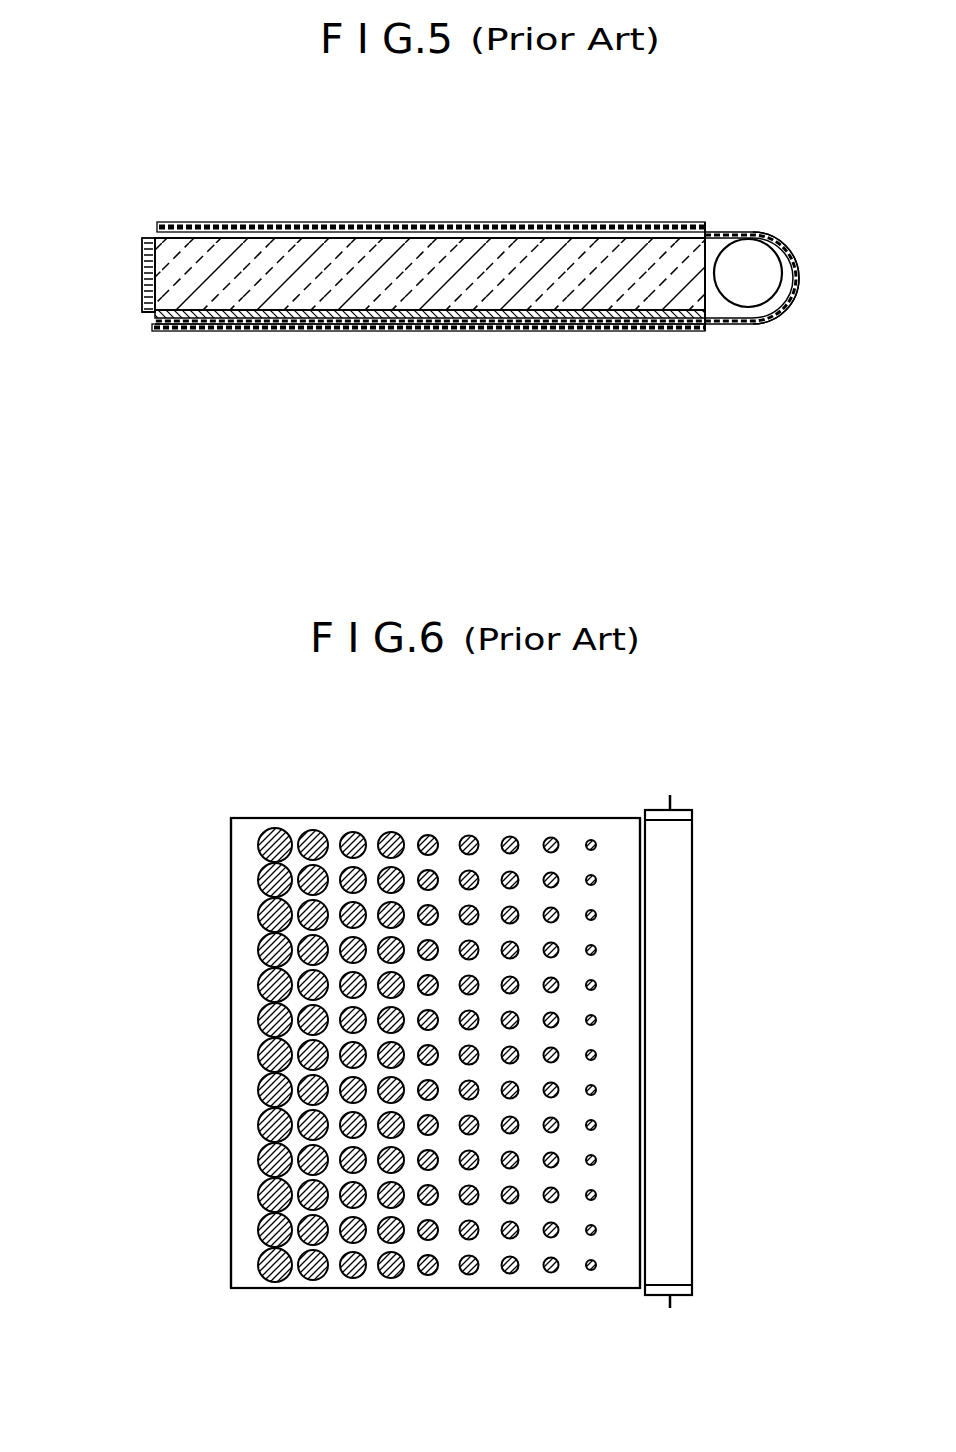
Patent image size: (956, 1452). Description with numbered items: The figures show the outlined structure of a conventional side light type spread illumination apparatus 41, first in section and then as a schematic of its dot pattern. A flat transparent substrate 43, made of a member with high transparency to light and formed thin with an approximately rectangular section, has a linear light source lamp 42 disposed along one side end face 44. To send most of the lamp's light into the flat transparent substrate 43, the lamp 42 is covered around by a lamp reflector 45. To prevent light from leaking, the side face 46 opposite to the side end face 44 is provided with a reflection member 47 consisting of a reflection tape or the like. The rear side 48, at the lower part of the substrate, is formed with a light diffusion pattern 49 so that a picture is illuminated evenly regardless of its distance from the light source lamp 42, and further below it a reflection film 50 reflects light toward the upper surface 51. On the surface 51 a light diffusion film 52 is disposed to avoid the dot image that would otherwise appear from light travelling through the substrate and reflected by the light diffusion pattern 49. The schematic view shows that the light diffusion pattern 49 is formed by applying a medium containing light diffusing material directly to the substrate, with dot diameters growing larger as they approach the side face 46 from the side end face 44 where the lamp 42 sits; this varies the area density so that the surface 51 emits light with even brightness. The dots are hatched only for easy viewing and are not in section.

In FIG. 5, the spread illumination apparatus 41 is at (437, 216).
In FIG. 5, the light source lamp 42 is at (750, 295).
In FIG. 6, the light source lamp 42 is at (680, 920).
In FIG. 5, the flat transparent substrate 43 is at (326, 240).
In FIG. 6, the flat transparent substrate 43 is at (328, 815).
In FIG. 5, the side end face 44 is at (707, 238).
In FIG. 6, the side end face 44 is at (640, 1098).
In FIG. 5, the lamp reflector 45 is at (774, 233).
In FIG. 5, the side face 46 is at (152, 236).
In FIG. 6, the side face 46 is at (233, 1092).
In FIG. 5, the reflection member 47 is at (147, 314).
In FIG. 5, the rear side 48 is at (491, 306).
In FIG. 6, the rear side 48 is at (253, 1210).
In FIG. 5, the light diffusion pattern 49 is at (586, 323).
In FIG. 6, the light diffusion pattern 49 is at (506, 838).
In FIG. 5, the reflection film 50 is at (244, 331).
In FIG. 5, the surface 51 is at (521, 236).
In FIG. 5, the light diffusion film 52 is at (262, 222).